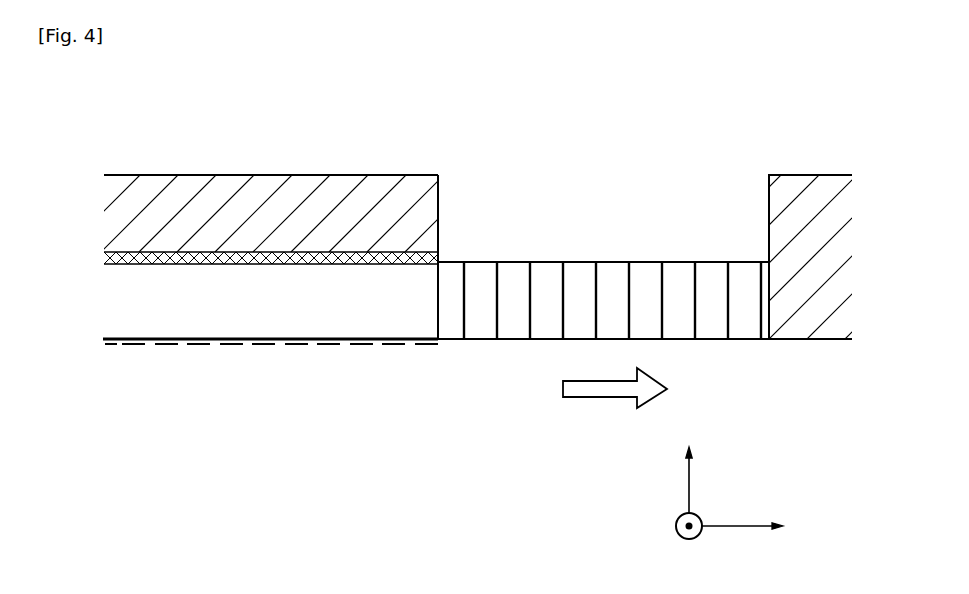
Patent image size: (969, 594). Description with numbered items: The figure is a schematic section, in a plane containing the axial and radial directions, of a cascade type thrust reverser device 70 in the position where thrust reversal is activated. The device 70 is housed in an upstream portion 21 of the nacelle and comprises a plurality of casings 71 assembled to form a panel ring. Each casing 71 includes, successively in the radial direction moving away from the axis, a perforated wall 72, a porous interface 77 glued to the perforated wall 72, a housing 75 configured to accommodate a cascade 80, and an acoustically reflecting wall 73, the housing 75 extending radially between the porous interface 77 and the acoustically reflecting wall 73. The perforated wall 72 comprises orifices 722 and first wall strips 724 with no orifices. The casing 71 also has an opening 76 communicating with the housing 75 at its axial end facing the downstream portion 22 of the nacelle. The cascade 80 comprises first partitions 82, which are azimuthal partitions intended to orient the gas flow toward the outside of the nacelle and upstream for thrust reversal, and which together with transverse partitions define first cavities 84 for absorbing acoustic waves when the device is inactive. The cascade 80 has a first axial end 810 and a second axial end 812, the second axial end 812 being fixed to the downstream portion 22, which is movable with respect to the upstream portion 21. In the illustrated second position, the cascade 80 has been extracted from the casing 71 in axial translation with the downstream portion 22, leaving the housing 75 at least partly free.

The thrust reverser device 70 is at (493, 294).
The upstream portion 21 is at (268, 231).
The downstream portion 22 is at (812, 195).
The casing 71 is at (112, 216).
The acoustically reflecting wall 73 is at (120, 263).
The housing 75 is at (221, 299).
The opening 76 is at (431, 296).
The porous interface 77 is at (132, 338).
The perforated wall 72 is at (250, 369).
The first wall strips 724 is at (271, 369).
The orifices 722 is at (381, 345).
The cascade 80 is at (645, 261).
The first partitions 82 is at (645, 285).
The first cavities 84 is at (645, 285).
The first axial end 810 is at (645, 263).
The second axial end 812 is at (664, 252).